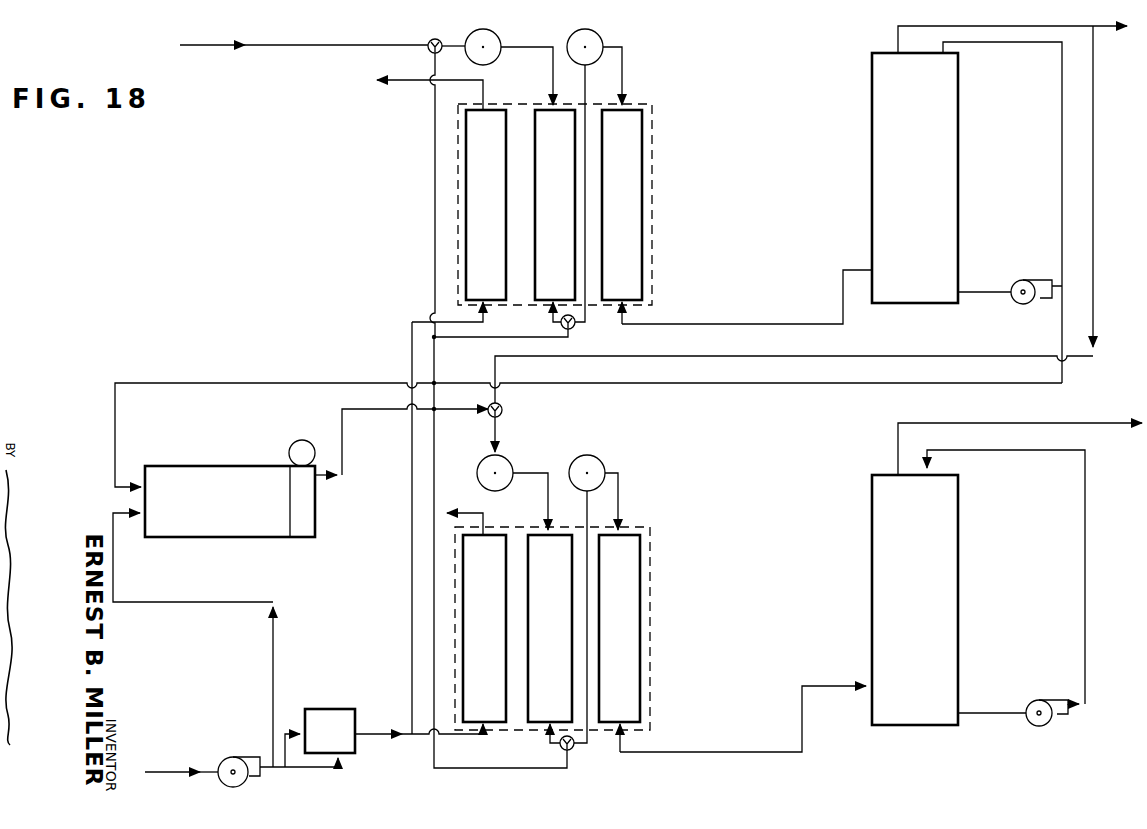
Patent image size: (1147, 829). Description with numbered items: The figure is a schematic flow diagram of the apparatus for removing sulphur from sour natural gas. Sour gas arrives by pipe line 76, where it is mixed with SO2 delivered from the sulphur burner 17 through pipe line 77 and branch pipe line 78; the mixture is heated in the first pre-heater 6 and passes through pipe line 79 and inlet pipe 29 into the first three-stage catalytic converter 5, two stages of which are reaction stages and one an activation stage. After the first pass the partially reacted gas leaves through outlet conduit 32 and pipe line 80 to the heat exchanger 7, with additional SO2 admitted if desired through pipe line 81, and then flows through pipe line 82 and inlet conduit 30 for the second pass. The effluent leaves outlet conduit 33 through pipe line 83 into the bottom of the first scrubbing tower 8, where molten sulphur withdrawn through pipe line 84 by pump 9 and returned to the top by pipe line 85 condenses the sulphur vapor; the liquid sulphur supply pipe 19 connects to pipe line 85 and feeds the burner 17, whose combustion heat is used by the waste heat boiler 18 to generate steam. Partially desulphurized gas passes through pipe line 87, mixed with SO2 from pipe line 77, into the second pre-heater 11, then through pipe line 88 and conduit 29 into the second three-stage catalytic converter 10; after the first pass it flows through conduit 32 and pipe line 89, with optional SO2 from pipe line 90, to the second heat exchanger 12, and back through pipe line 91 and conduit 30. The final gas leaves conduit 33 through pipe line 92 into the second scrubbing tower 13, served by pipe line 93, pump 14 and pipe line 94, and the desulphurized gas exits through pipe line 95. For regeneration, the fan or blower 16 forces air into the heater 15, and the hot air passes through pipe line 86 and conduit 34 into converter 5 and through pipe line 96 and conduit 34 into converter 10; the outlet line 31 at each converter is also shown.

The first three-stage catalytic converter 5 is at (652, 205).
The first pre-heater 6 is at (490, 36).
The heat exchanger 7 is at (593, 36).
The first scrubbing tower 8 is at (948, 158).
The pump 9 is at (1025, 280).
The second three-stage catalytic converter 10 is at (650, 608).
The second pre-heater 11 is at (507, 458).
The second heat exchanger 12 is at (600, 460).
The second scrubbing tower 13 is at (955, 592).
The pump 14 is at (1041, 700).
The heater 15 is at (338, 709).
The fan or blower 16 is at (233, 757).
The sulphur burner 17 is at (215, 466).
The waste heat boiler 18 is at (304, 440).
The liquid sulphur supply pipe 19 is at (240, 383).
The inlet pipe 29 is at (551, 85).
The inlet conduit 30 is at (623, 92).
The adsorbent column outlet line 31 is at (481, 88).
The outlet conduit 32 is at (545, 318).
The outlet conduit 33 is at (628, 316).
The inlet (outlet) conduit 34 is at (500, 324).
The pipe line 76 is at (305, 45).
The pipe line 77 is at (368, 411).
The branch pipe line 78 is at (432, 238).
The pipe line 79 is at (550, 47).
The pipe line 80 is at (585, 305).
The pipe line 81 is at (441, 341).
The pipe line 82 is at (622, 68).
The pipe line 83 is at (735, 324).
The pipe line 84 is at (980, 287).
The pipe line 85 is at (1062, 135).
The pipe line 86 is at (410, 592).
The pipe line 87 is at (1093, 226).
The pipe line 88 is at (548, 470).
The pipe line 89 is at (587, 690).
The pipe line 90 is at (480, 768).
The pipe line 91 is at (618, 490).
The pipe line 92 is at (708, 752).
The pipe line 93 is at (976, 715).
The pipe line 94 is at (1085, 637).
The pipe line 95 is at (1018, 423).
The pipe line 96 is at (1107, 30).